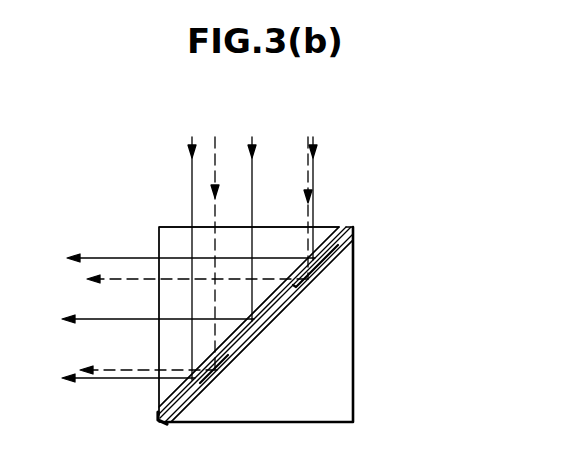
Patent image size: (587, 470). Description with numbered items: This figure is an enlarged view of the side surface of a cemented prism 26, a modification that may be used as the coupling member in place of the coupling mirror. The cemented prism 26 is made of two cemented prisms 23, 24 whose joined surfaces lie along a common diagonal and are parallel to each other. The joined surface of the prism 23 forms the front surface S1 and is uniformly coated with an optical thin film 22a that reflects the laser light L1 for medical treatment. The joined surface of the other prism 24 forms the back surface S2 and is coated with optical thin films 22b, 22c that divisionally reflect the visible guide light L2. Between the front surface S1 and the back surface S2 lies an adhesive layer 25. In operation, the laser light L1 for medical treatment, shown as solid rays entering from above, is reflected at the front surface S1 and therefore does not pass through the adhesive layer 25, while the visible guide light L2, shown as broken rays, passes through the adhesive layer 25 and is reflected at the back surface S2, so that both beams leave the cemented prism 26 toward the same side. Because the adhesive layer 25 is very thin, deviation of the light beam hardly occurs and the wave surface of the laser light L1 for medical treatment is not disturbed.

The optical thin film 22a is at (332, 228).
The optical thin film 22b is at (339, 251).
The optical thin film 22c is at (176, 423).
The prism 23 is at (168, 250).
The prism 24 is at (308, 411).
The adhesive layer 25 is at (265, 320).
The cemented prism 26 is at (354, 386).
The front surface S1 is at (167, 401).
The back surface S2 is at (204, 394).
The laser light for medical treatment L1 is at (252, 146).
The visible guide light L2 is at (215, 156).